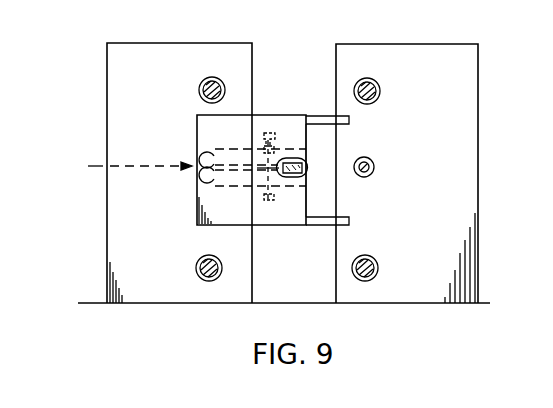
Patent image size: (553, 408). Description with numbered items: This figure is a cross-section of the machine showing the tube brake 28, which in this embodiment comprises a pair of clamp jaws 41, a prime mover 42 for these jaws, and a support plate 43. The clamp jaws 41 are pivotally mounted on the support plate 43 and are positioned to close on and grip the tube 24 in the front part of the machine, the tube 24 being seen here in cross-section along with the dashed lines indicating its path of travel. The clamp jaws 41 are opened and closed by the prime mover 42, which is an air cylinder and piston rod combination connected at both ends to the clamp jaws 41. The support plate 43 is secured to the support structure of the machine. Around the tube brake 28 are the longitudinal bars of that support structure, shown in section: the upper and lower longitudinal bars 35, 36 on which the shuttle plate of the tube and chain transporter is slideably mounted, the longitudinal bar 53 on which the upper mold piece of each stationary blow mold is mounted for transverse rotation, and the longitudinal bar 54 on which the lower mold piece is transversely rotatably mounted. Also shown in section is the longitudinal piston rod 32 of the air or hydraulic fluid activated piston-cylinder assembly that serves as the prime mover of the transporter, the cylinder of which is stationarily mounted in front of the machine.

The tube brake 28 is at (131, 168).
The longitudinal bar 53 is at (224, 87).
The support plate 43 is at (259, 126).
The upper longitudinal bar 35 is at (356, 82).
The tube 24 is at (295, 167).
The longitudinal piston rod 32 is at (375, 167).
The clamp jaws 41 is at (302, 171).
The prime mover 42 is at (277, 182).
The longitudinal bar 54 is at (207, 282).
The lower longitudinal bar 36 is at (368, 282).